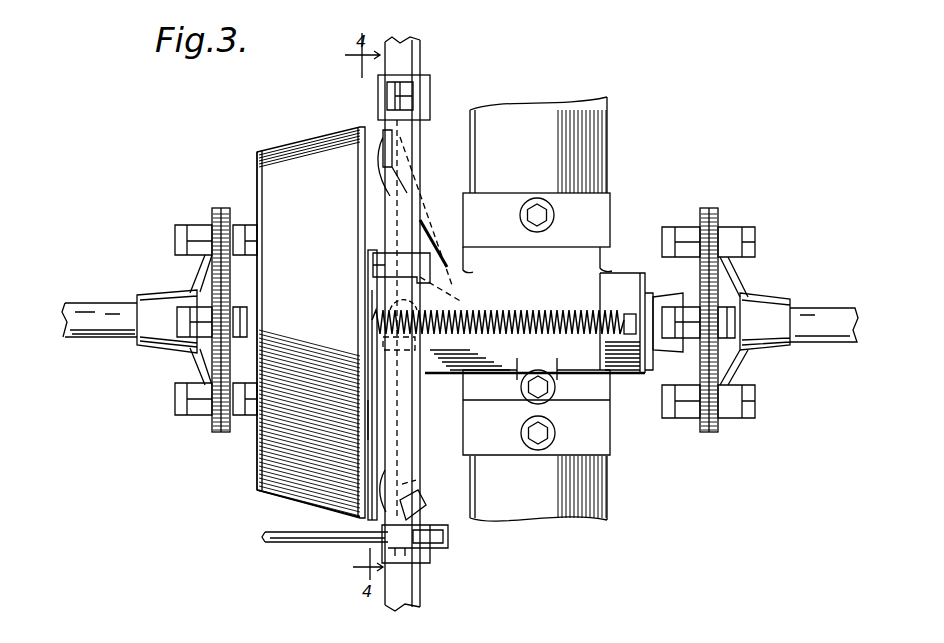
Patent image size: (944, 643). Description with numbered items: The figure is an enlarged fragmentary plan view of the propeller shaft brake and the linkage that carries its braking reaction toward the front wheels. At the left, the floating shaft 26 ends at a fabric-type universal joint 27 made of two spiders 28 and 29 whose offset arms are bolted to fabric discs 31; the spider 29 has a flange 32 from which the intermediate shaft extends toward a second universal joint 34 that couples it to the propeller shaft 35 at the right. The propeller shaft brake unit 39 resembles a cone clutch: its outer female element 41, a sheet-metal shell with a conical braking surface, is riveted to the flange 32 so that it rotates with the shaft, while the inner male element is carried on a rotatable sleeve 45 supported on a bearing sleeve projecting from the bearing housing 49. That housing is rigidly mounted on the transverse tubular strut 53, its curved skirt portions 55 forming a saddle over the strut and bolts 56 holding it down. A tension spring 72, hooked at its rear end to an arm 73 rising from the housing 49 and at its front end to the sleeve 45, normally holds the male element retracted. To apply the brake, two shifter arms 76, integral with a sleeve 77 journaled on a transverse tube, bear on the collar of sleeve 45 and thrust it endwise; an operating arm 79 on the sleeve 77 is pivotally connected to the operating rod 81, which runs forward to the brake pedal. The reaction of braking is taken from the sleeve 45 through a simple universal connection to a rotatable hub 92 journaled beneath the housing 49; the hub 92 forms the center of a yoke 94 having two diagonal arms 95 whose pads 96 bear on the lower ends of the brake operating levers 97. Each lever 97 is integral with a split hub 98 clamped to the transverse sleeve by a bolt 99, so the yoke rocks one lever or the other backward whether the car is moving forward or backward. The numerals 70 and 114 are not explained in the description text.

The shaft 26 is at (82, 313).
The universal joint 27 is at (196, 225).
The spider 28 is at (197, 279).
The spider 29 is at (243, 416).
The fabric discs 31 is at (222, 208).
The flange 32 is at (250, 299).
The universal joint 34 is at (712, 208).
The propeller shaft 35 is at (831, 343).
The propeller shaft brake unit 39 is at (298, 134).
The outer female element 41 is at (260, 483).
The rotatable sleeve 45 is at (377, 292).
The bearing housing 49 is at (603, 273).
The tubular strut 53 is at (580, 117).
The curved skirt portions 55 is at (612, 440).
The bolts 56 is at (537, 206).
The bar face 70 is at (368, 380).
The tension spring 72 is at (542, 311).
The arm 73 is at (628, 336).
The shifter arms 76 is at (373, 262).
The sleeve 77 is at (368, 422).
The operating arm 79 is at (422, 518).
The operating rod 81 is at (292, 527).
The rotatable hub 92 is at (466, 303).
The yoke 94 is at (425, 243).
The arms 95 is at (443, 275).
The pads 96 is at (385, 138).
The brake operating levers 97 is at (418, 151).
The split hub 98 is at (428, 84).
The bolt 99 is at (387, 96).
The nut 114 is at (548, 387).